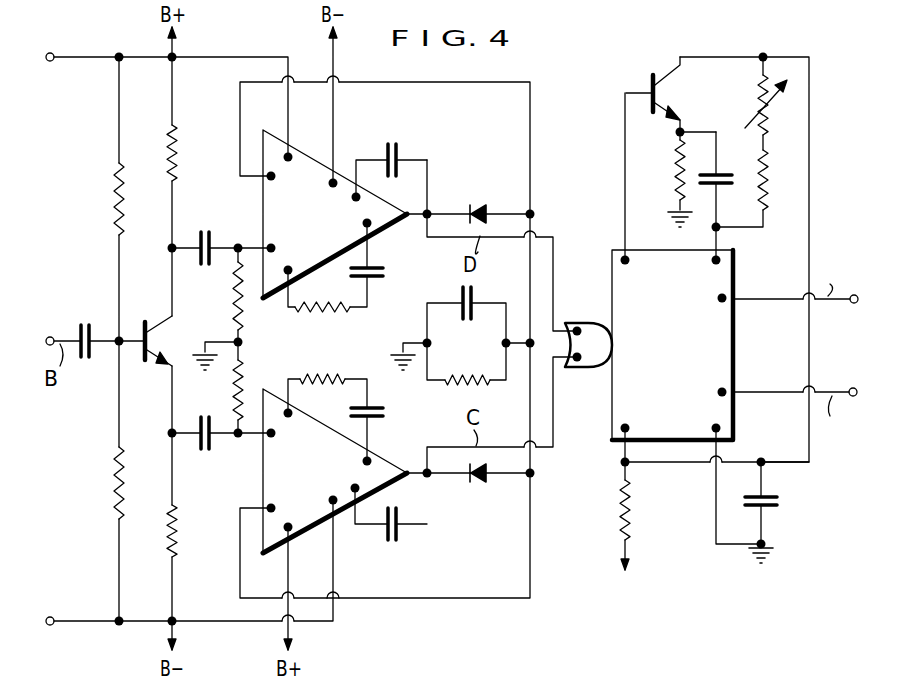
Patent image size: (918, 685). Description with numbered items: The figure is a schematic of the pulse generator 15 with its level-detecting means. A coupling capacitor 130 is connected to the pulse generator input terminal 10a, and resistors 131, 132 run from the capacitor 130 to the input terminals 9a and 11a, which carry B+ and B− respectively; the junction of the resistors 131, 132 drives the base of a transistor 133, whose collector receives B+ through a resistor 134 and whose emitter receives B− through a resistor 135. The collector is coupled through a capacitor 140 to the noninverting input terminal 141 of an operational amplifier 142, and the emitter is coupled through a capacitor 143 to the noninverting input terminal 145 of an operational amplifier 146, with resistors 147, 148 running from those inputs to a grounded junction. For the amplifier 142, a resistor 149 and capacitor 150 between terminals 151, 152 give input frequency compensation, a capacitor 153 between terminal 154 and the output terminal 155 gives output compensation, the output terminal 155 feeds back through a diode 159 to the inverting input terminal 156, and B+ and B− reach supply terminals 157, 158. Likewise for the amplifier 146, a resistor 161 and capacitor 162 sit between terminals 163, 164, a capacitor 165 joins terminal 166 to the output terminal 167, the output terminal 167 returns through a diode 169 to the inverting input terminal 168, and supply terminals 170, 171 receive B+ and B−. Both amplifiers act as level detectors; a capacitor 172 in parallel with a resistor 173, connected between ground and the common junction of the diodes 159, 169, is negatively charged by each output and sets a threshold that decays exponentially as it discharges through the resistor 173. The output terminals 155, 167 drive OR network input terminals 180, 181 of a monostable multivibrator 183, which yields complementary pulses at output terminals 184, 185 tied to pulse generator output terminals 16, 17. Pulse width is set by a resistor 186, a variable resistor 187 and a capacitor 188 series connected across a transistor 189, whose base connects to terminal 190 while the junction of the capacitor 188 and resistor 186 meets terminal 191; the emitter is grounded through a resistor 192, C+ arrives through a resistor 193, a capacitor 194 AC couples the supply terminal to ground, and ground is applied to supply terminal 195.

The pulse generator input terminal 9a is at (46, 56).
The pulse generator input terminal 10a is at (50, 340).
The pulse generator input terminal 11a is at (50, 620).
The pulse generator 15 is at (540, 75).
The pulse generator output terminal 16 is at (854, 294).
The pulse generator output terminal 17 is at (858, 396).
The coupling capacitor 130 is at (84, 324).
The resistor 131 is at (112, 200).
The resistor 132 is at (112, 480).
The transistor 133 is at (146, 324).
The resistor 134 is at (178, 158).
The resistor 135 is at (178, 530).
The capacitor 140 is at (206, 232).
The noninverting input terminal 141 is at (269, 246).
The operational amplifier 142 is at (271, 140).
The capacitor 143 is at (206, 452).
The noninverting input terminal 145 is at (268, 437).
The operational amplifier 146 is at (266, 402).
The resistor 147 is at (234, 298).
The resistor 148 is at (234, 396).
The resistor 149 is at (314, 312).
The capacitor 150 is at (384, 272).
The terminal 151 is at (294, 273).
The terminal 152 is at (368, 226).
The capacitor 153 is at (392, 144).
The amplifier terminal 154 is at (360, 197).
The output terminal 155 is at (428, 212).
The inverting input terminal 156 is at (268, 178).
The voltage supply terminal 157 is at (290, 156).
The voltage supply terminal 158 is at (334, 180).
The diode 159 is at (478, 206).
The resistor 161 is at (330, 378).
The capacitor 162 is at (383, 412).
The terminal 163 is at (288, 413).
The terminal 164 is at (368, 460).
The capacitor 165 is at (392, 540).
The terminal 166 is at (360, 490).
The output terminal 167 is at (428, 476).
The inverting input terminal 168 is at (268, 508).
The diode 169 is at (478, 480).
The voltage supply terminal 170 is at (289, 530).
The voltage supply terminal 171 is at (334, 502).
The capacitor 172 is at (466, 318).
The resistor 173 is at (458, 380).
The OR network input terminal 180 is at (577, 331).
The OR network input terminal 181 is at (577, 358).
The monostable multivibrator 183 is at (612, 280).
The output terminal 184 is at (724, 298).
The output terminal 185 is at (724, 390).
The resistor 186 is at (766, 194).
The variable resistor 187 is at (764, 112).
The capacitor 188 is at (736, 178).
The transistor 189 is at (650, 86).
The terminal 190 is at (628, 260).
The multivibrator terminal 191 is at (724, 260).
The resistor 192 is at (678, 178).
The resistor 193 is at (622, 512).
The capacitor 194 is at (778, 502).
The supply voltage terminal 195 is at (722, 428).